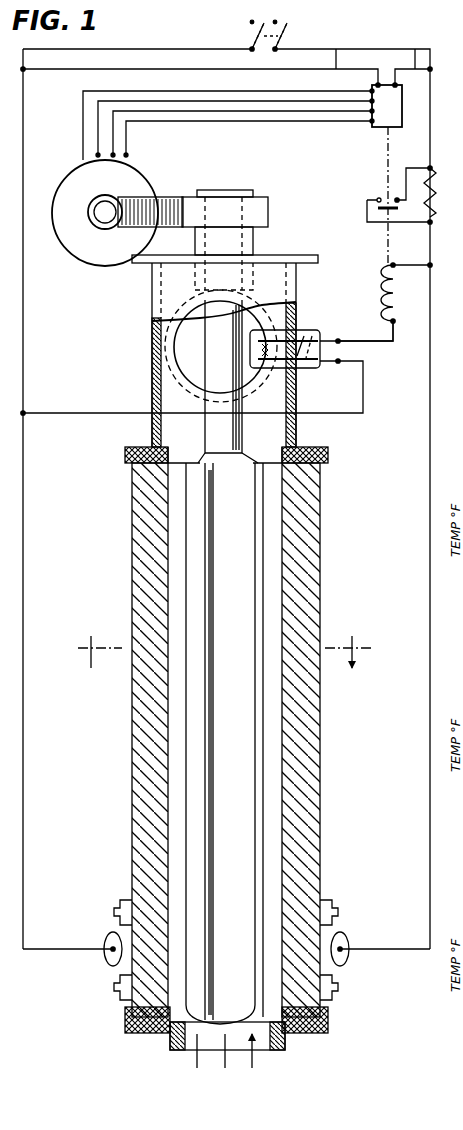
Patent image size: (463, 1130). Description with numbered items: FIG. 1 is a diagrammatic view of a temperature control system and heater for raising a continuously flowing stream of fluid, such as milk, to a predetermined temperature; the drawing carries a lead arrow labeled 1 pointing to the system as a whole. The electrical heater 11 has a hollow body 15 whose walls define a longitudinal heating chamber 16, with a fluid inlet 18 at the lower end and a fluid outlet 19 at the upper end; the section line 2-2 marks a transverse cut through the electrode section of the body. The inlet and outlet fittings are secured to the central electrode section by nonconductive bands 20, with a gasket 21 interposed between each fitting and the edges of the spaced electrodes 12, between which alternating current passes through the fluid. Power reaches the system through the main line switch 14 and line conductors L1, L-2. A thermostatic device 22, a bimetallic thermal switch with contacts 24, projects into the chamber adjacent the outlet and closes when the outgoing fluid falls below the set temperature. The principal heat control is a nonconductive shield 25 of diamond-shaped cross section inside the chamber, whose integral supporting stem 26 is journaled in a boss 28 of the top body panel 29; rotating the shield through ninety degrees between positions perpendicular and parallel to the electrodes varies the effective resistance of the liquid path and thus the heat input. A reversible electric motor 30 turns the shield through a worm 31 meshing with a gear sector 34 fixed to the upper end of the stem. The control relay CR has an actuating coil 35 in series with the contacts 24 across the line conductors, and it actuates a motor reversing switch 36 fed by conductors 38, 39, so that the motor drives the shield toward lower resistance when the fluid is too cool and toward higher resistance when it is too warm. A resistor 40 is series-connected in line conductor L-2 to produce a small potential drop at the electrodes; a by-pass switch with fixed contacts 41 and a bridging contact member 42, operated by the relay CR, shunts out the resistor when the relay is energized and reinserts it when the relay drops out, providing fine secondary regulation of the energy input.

The dry vaporizer / vaporizing system 1 is at (436, 375).
The electrical heater 11 is at (328, 735).
The electrodes 12 is at (146, 811).
The main line switch 14 is at (266, 46).
The hollow body 15 is at (168, 850).
The heating chamber 16 is at (176, 751).
The fluid inlet 18 is at (185, 1052).
The fluid outlet 19 is at (180, 349).
The nonconductive bands 20 is at (126, 455).
The gasket 21 is at (170, 461).
The thermostatic device 22 is at (302, 372).
The contacts 24 is at (310, 352).
The nonconductive shield 25 is at (205, 718).
The supporting stem 26 is at (233, 404).
The boss 28 is at (255, 246).
The top body panel 29 is at (300, 255).
The reversible electric motor 30 is at (85, 252).
The worm 31 is at (88, 204).
The gear sector 34 is at (174, 197).
The actuating coil 35 is at (391, 290).
The motor reversing switch 36 is at (393, 127).
The conductor 38 is at (336, 69).
The conductor 39 is at (415, 69).
The resistor 40 is at (434, 201).
The fixed contacts 41 is at (378, 198).
The bridging contact member 42 is at (393, 210).
The line conductor L1 is at (194, 49).
The line conductor L-2 is at (391, 49).
The control relay CR is at (360, 295).
The section line 2- 2 is at (225, 642).